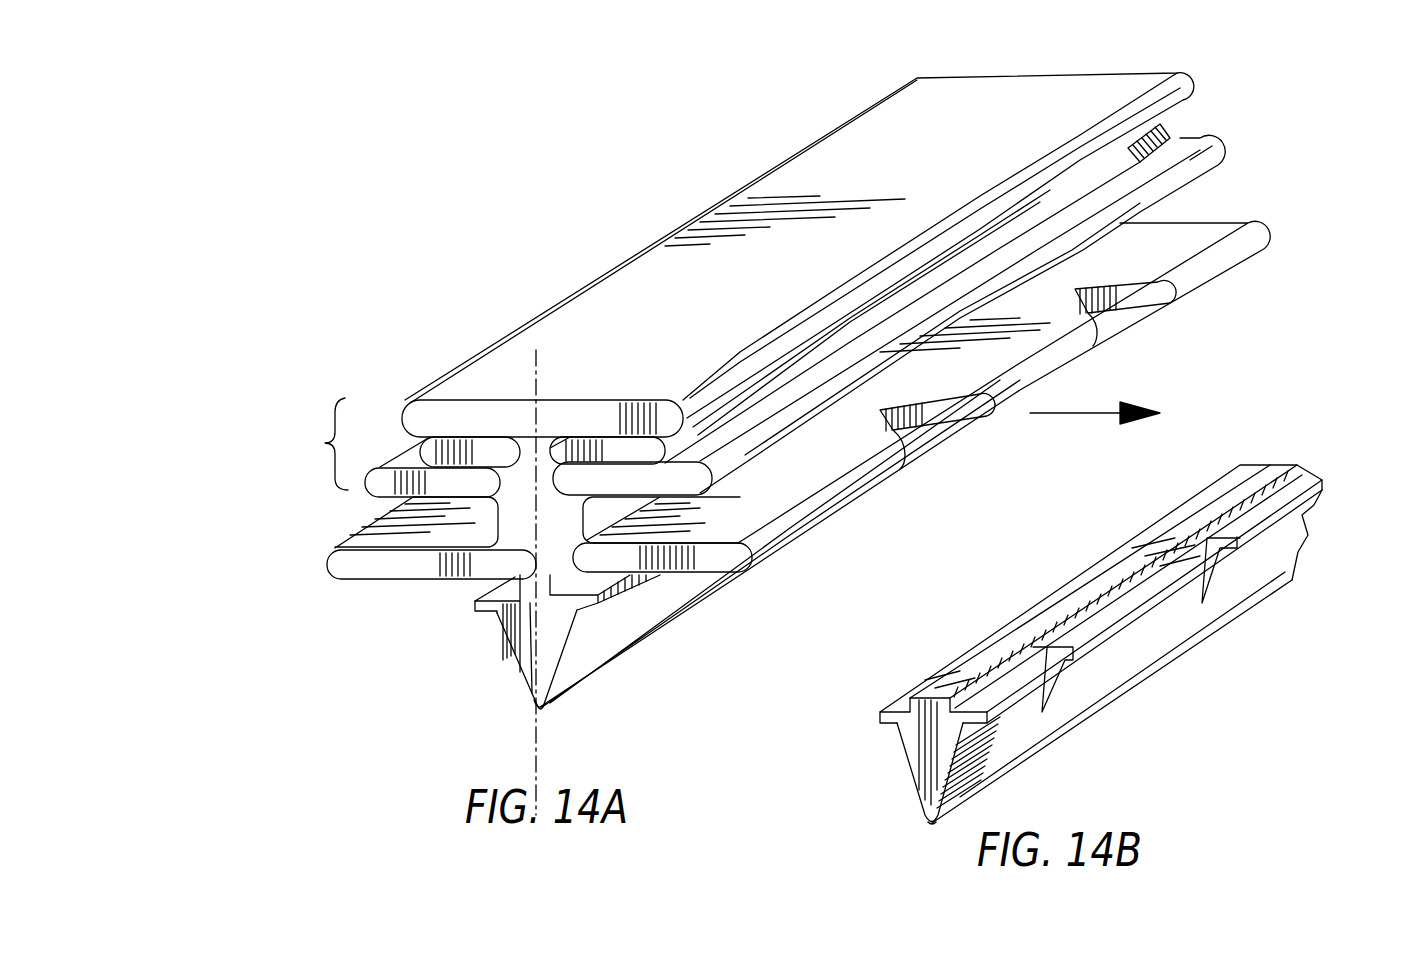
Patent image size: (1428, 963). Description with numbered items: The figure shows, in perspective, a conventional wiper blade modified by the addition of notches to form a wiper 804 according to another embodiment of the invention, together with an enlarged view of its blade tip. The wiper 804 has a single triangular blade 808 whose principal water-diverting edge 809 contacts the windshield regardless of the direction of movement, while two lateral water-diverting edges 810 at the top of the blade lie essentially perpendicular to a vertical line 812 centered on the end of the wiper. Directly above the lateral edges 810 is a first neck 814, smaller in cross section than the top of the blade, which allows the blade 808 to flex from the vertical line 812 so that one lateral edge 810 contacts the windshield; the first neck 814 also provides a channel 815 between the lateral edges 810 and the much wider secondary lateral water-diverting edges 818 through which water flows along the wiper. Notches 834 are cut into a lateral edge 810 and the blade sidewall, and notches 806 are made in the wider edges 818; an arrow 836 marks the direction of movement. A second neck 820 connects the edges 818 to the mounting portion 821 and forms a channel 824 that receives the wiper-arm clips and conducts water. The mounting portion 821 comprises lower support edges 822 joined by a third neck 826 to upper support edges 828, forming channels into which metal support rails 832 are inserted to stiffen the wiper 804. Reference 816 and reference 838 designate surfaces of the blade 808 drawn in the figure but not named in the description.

In FIG. 14A, the wiper 804 is at (857, 514).
In FIG. 14A, the notches 806 is at (933, 420).
In FIG. 14A, the blade 808 is at (507, 650).
In FIG. 14B, the blade 808 is at (912, 753).
In FIG. 14B, the principal water-diverting edge 809 is at (933, 826).
In FIG. 14A, the lateral water-diverting edges 810 is at (500, 624).
In FIG. 14B, the lateral water-diverting edges 810 is at (880, 712).
In FIG. 14A, the vertical line 812 is at (545, 720).
In FIG. 14B, the first neck 814 is at (977, 670).
In FIG. 14A, the channel 815 is at (474, 604).
In FIG. 14A, the side surface of tongue 816 is at (523, 694).
In FIG. 14B, the side surface of tongue 816 is at (927, 757).
In FIG. 14A, the lateral water-diverting edges 818 is at (327, 568).
In FIG. 14A, the second neck 820 is at (523, 533).
In FIG. 14A, the mounting portion 821 is at (332, 443).
In FIG. 14A, the lower support edges 822 is at (383, 488).
In FIG. 14A, the channel 824 is at (657, 578).
In FIG. 14A, the third neck 826 is at (583, 432).
In FIG. 14A, the upper support edges 828 is at (410, 401).
In FIG. 14A, the support rails 832 is at (483, 447).
In FIG. 14B, the notches 834 is at (1060, 660).
In FIG. 14A, the arrow 836 is at (1097, 420).
In FIG. 14B, the side face of stem 838 is at (1017, 727).